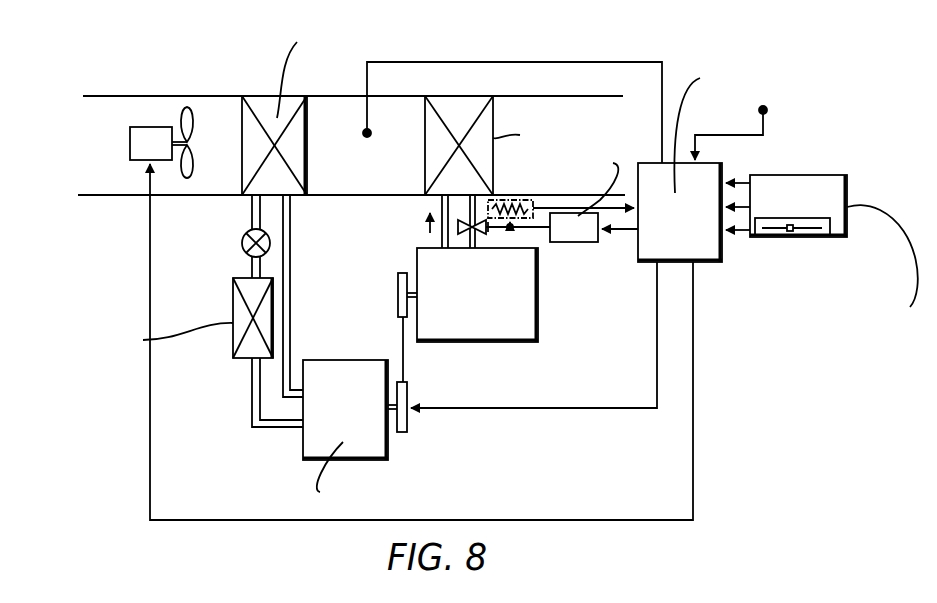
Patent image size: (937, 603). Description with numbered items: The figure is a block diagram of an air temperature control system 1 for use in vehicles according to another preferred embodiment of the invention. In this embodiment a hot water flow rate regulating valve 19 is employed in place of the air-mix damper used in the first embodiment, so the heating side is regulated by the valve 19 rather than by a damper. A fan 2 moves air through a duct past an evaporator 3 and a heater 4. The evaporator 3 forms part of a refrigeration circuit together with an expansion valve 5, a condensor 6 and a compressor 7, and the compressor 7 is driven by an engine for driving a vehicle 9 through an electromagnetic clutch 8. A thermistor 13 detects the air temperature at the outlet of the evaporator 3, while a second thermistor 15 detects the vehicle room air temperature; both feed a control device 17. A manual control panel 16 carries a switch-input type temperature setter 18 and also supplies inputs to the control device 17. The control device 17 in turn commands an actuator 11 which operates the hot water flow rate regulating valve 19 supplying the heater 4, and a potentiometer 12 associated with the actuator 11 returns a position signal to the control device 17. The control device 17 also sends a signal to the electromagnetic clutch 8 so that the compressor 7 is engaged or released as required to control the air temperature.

The air temperature control system 1 is at (153, 96).
The fan 2 is at (130, 143).
The evaporator 3 is at (258, 96).
The heater 4 is at (425, 147).
The expansion valve 5 is at (242, 238).
The condensor 6 is at (233, 297).
The compressor 7 is at (303, 445).
The electromagnetic clutch 8 is at (408, 428).
The engine for driving a vehicle 9 is at (538, 323).
The actuator 11 is at (582, 242).
The potentiometer 12 is at (508, 200).
The thermistor 13 is at (363, 135).
The thermistor 15 is at (767, 110).
The manual control panel 16 is at (797, 190).
The control device 17 is at (713, 263).
The switch-input type temperature setter 18 is at (778, 235).
The hot water flow rate regulating valve 19 is at (458, 222).